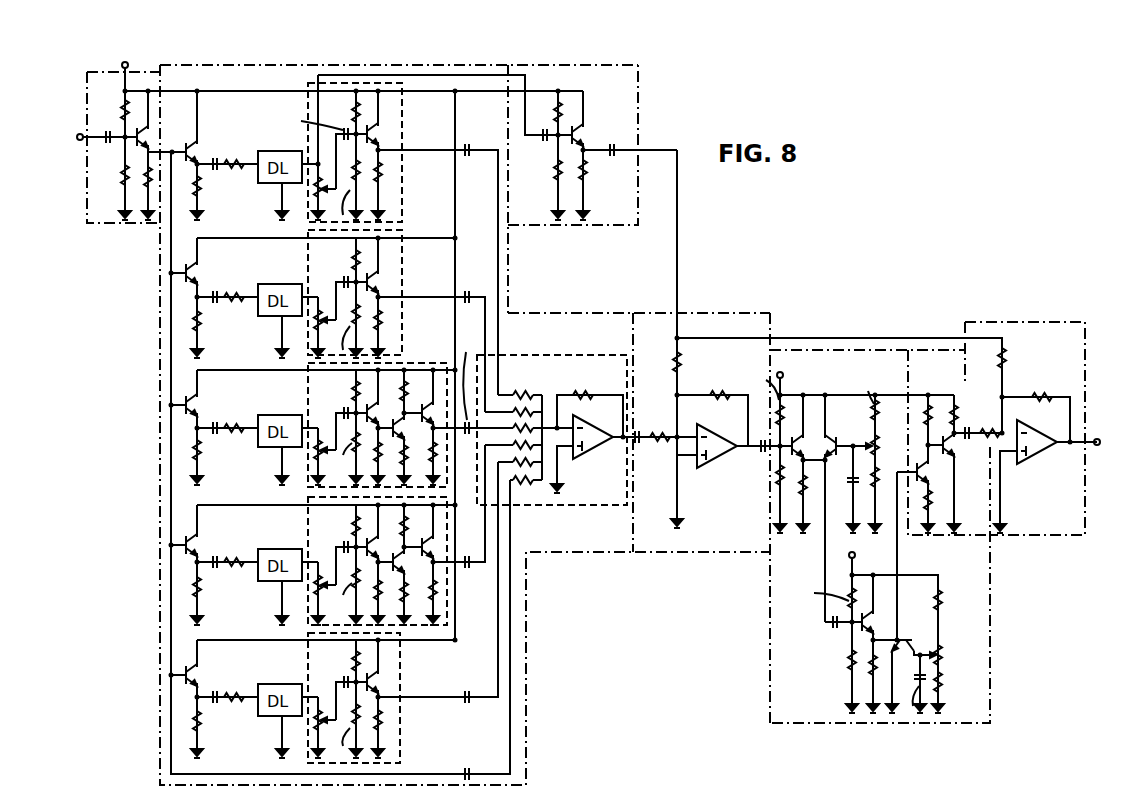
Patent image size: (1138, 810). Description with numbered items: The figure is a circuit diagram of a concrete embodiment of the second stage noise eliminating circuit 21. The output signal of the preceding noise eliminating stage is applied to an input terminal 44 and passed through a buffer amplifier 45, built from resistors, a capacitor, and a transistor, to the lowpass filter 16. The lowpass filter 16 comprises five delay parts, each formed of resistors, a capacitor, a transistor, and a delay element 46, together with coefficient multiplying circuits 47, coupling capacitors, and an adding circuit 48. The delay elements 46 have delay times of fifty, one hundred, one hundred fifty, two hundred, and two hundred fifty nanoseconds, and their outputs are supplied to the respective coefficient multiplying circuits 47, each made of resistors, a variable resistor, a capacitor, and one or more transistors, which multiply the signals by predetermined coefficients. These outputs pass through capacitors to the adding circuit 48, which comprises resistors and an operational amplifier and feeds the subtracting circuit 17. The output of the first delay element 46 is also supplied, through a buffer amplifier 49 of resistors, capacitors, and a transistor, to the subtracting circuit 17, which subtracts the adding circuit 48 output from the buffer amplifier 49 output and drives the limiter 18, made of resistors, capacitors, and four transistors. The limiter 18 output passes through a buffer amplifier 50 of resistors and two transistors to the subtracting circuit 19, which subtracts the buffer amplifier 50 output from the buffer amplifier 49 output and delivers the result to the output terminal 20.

The input terminal 44 is at (79, 134).
The buffer amplifier 45 is at (87, 224).
The lowpass filter 16 is at (156, 322).
The delay element 46 is at (263, 734).
The coefficient multiplying circuit 47 is at (403, 100).
The adding circuit 48 is at (547, 354).
The buffer amplifier 49 is at (641, 100).
The subtracting circuit 17 is at (709, 311).
The limiter 18 is at (835, 348).
The buffer amplifier 50 is at (943, 348).
The subtracting circuit 19 is at (989, 319).
The output terminal 20 is at (1100, 429).
The second stage noise eliminating circuit 21 is at (815, 263).